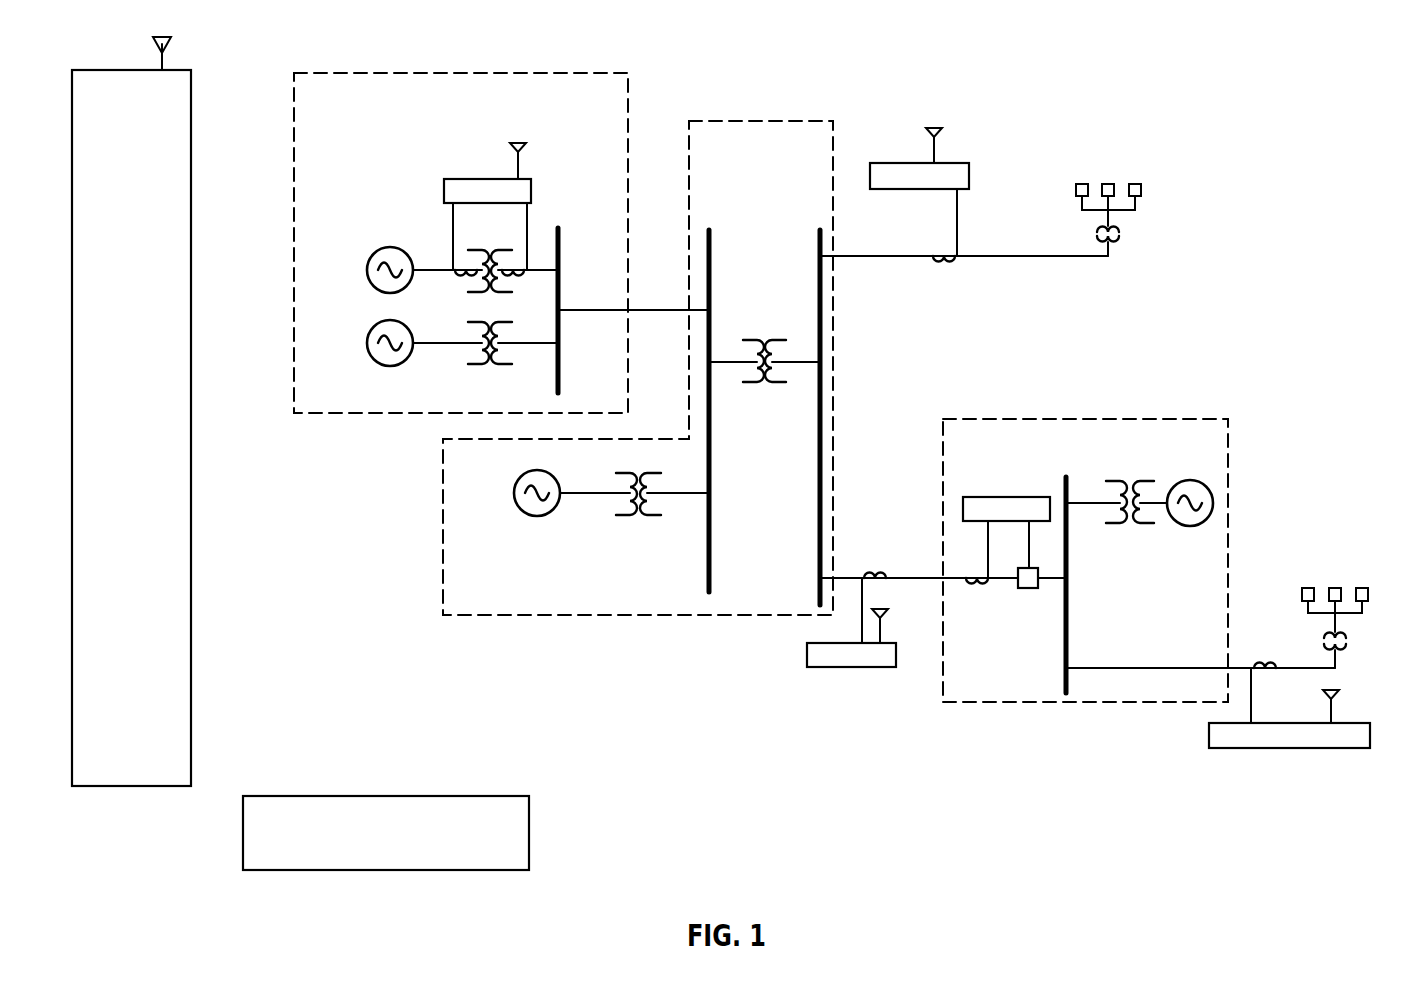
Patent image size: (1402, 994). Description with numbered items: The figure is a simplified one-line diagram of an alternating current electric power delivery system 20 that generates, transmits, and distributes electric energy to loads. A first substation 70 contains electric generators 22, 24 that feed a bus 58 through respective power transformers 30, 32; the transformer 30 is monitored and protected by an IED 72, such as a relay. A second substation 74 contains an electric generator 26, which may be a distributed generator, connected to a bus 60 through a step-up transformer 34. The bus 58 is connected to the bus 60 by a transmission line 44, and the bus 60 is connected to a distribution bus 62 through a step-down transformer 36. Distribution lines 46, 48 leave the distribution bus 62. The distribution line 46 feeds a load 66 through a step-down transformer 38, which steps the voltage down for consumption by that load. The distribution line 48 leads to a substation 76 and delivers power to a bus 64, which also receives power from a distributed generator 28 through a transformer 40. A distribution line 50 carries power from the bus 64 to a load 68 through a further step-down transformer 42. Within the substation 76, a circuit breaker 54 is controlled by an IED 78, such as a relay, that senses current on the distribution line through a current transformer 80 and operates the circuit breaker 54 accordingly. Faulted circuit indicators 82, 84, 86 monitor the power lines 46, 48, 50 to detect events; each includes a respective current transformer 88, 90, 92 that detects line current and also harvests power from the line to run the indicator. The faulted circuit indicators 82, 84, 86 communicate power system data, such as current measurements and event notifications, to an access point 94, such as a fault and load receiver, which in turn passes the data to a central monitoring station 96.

The electric power delivery system 20 is at (1177, 93).
The electric generator 22 is at (366, 268).
The electric generator 24 is at (366, 341).
The electric generator 26 is at (514, 493).
The distributed generator 28 is at (1180, 526).
The power transformer 30 is at (468, 288).
The power transformer 32 is at (490, 366).
The step-up transformer 34 is at (622, 504).
The step-down transformer 36 is at (766, 340).
The step-down transformer 38 is at (1122, 233).
The power transformer 40 is at (1126, 482).
The step-down transformer 42 is at (1348, 648).
The transmission line 44 is at (644, 311).
The distribution line 46 is at (866, 258).
The distribution line 48 is at (904, 580).
The distribution line 50 is at (1160, 667).
The circuit breaker 54 is at (1030, 589).
The bus 58 is at (561, 372).
The bus 60 is at (711, 455).
The distribution bus 62 is at (818, 572).
The bus 64 is at (1063, 652).
The load 66 is at (1146, 186).
The load 68 is at (1335, 588).
The first substation 70 is at (404, 73).
The IED 72 is at (463, 179).
The second substation 74 is at (442, 500).
The substation 76 is at (1092, 703).
The IED 78 is at (985, 497).
The current transformer 80 is at (980, 586).
The faulted circuit indicator 82 is at (884, 163).
The faulted circuit indicator 84 is at (808, 658).
The faulted circuit indicator 86 is at (1340, 749).
The current transformer 88 is at (950, 264).
The current transformer 90 is at (868, 574).
The current transformer 92 is at (1256, 666).
The access point 94 is at (192, 616).
The central monitoring station 96 is at (531, 818).